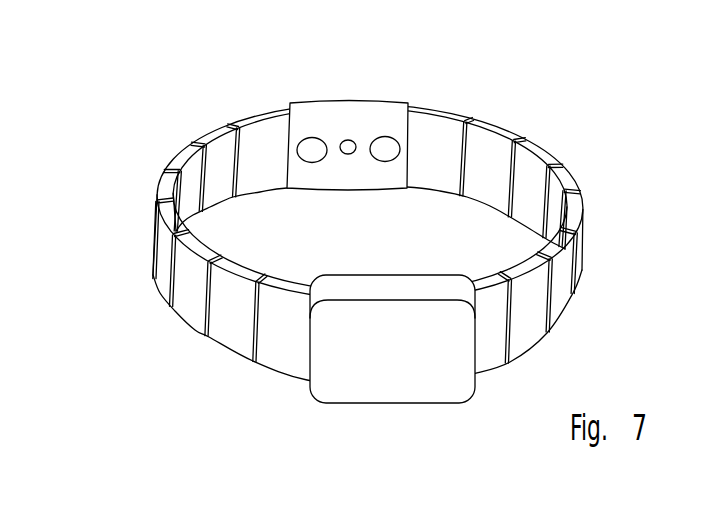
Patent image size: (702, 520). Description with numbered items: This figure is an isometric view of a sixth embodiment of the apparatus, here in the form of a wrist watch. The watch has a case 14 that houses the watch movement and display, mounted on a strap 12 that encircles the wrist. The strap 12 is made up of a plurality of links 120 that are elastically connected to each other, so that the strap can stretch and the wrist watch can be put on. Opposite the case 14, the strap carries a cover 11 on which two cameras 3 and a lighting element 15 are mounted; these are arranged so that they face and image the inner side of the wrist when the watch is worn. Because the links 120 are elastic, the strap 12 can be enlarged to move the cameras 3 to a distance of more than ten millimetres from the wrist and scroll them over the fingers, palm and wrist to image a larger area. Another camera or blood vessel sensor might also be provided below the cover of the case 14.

The camera 3 is at (313, 148).
The cover 11 is at (372, 104).
The strap 12 is at (140, 298).
The case 14 is at (379, 368).
The lighting element 15 is at (347, 144).
The link 120 is at (198, 308).